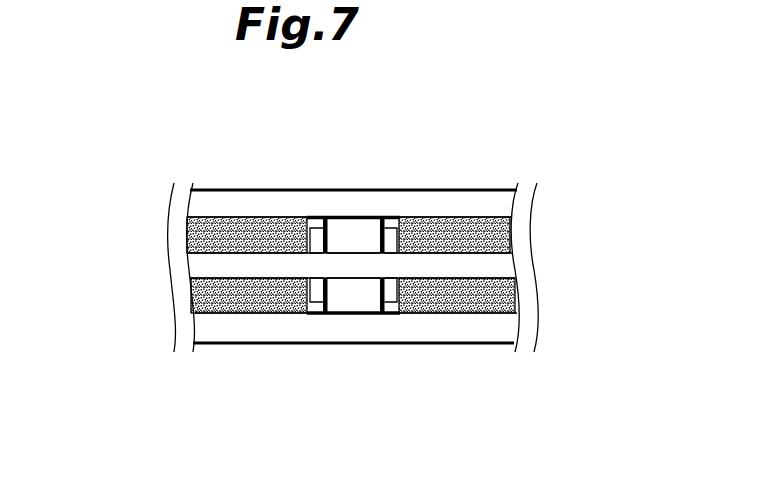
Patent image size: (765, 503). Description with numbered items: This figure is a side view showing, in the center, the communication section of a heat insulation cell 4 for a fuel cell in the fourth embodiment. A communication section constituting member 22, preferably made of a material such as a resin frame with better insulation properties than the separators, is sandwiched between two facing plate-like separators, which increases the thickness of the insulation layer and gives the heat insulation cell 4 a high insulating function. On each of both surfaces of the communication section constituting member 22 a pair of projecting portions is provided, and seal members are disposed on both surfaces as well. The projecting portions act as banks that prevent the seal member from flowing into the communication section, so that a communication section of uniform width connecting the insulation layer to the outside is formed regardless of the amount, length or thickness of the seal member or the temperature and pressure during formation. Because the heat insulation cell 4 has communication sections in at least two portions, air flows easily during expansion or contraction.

The heat insulation cell 4 is at (221, 184).
The communication section constituting member 22 is at (510, 265).